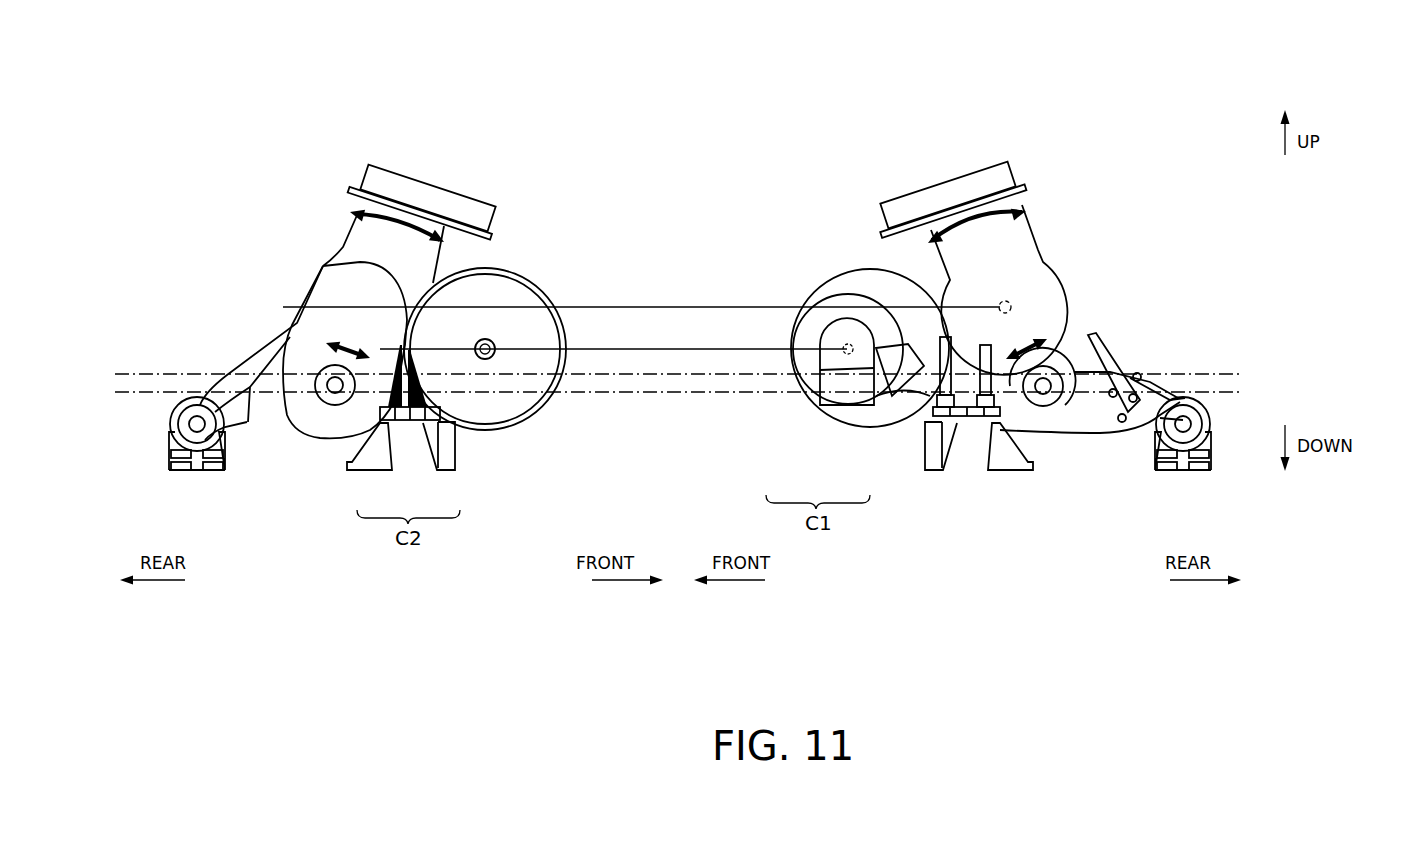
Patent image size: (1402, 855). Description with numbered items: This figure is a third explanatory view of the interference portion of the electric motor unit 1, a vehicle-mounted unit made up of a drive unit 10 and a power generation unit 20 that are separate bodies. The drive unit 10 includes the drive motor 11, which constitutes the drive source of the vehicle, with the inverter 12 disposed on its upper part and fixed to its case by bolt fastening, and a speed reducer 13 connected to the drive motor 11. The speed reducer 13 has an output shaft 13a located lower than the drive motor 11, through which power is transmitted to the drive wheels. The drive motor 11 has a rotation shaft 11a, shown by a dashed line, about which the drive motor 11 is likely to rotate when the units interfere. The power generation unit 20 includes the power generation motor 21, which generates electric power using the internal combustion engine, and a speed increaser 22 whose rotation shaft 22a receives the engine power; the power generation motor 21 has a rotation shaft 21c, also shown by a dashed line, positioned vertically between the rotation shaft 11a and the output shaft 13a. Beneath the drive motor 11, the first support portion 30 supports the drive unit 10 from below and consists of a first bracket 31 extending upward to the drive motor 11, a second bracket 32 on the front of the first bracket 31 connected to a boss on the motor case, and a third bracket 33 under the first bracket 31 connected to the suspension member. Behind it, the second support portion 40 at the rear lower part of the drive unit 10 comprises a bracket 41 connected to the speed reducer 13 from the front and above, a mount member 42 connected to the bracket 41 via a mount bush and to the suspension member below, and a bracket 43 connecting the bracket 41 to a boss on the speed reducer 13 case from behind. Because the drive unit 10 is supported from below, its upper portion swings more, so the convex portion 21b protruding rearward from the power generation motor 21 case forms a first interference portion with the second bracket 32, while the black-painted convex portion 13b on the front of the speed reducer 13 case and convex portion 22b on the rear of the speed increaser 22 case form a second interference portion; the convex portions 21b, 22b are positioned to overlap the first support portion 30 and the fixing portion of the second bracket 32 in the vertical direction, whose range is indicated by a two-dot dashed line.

The electric motor unit 1 is at (145, 112).
The drive unit 10 is at (306, 192).
The drive motor 11 is at (352, 226).
The rotation shaft 11a is at (1013, 303).
The inverter 12 is at (437, 180).
The speed reducer 13 is at (278, 338).
The output shaft 13a is at (1046, 392).
The convex portion 13b is at (395, 425).
The power generation unit 20 is at (538, 190).
The power generation motor 21 is at (852, 292).
The convex portion 21b is at (930, 395).
The rotation shaft 21c is at (843, 348).
The speed increaser 22 is at (545, 285).
The rotation shaft 22a is at (495, 352).
The convex portion 22b is at (422, 425).
The first support portion 30 is at (476, 460).
The first bracket 31 is at (450, 420).
The second bracket 32 is at (905, 392).
The third bracket 33 is at (346, 463).
The second support portion 40 is at (178, 367).
The bracket 41 is at (225, 400).
The mount member 42 is at (168, 422).
The bracket 43 is at (1112, 362).